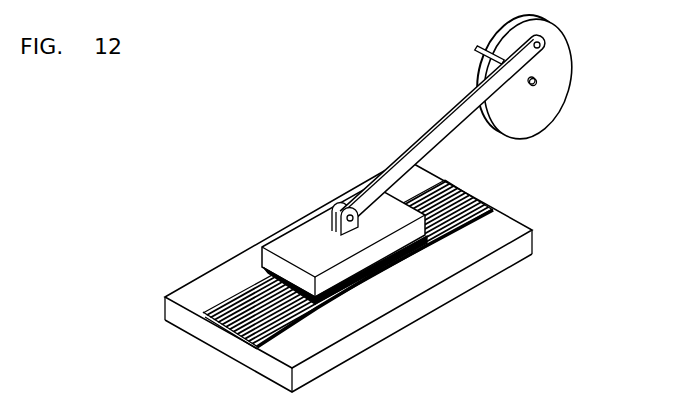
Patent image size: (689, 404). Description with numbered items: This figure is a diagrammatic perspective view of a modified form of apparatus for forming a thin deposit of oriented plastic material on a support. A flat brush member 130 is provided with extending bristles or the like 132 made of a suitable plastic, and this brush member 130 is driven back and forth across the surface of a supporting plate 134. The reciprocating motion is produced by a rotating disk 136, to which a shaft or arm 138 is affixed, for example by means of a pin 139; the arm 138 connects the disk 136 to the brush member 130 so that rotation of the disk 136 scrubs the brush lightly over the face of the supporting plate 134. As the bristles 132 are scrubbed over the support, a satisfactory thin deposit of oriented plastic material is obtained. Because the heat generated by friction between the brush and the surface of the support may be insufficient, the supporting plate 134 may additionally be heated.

The flat brush member 130 is at (291, 232).
The bristles 132 is at (397, 267).
The supporting plate 134 is at (520, 228).
The rotating disk 136 is at (553, 90).
The shaft or arm 138 is at (437, 125).
The pin 139 is at (541, 45).